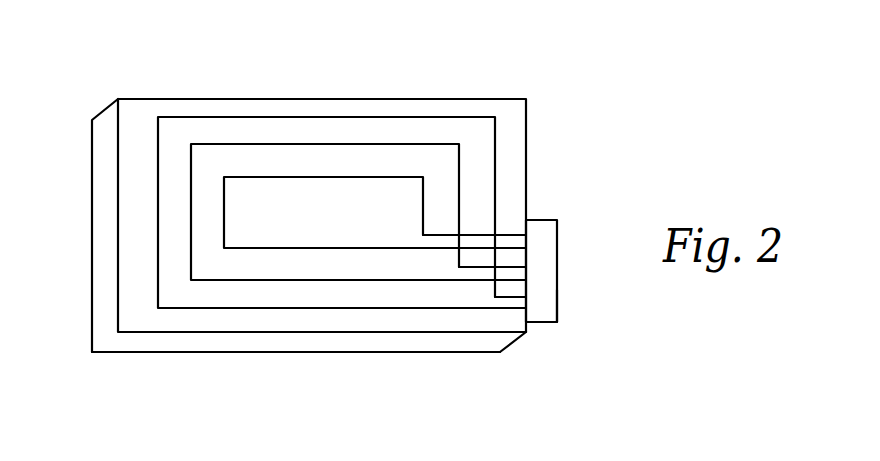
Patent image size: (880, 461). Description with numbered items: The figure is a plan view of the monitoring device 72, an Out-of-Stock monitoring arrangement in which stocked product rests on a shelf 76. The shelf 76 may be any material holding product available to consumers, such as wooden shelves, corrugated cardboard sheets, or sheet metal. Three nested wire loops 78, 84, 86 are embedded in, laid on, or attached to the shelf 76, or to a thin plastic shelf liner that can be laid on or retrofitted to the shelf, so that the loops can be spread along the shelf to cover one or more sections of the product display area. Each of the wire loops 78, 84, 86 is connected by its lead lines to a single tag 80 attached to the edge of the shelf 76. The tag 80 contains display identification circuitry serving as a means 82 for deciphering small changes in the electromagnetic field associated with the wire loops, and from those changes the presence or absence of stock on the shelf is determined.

The monitoring device 72 is at (93, 94).
The shelf 76 is at (220, 345).
The wire 78 is at (277, 115).
The tag 80 is at (535, 253).
The means for deciphering small changes in the electromagnetic field 82 is at (558, 295).
The wire loop 84 is at (191, 184).
The wire loop 86 is at (348, 248).